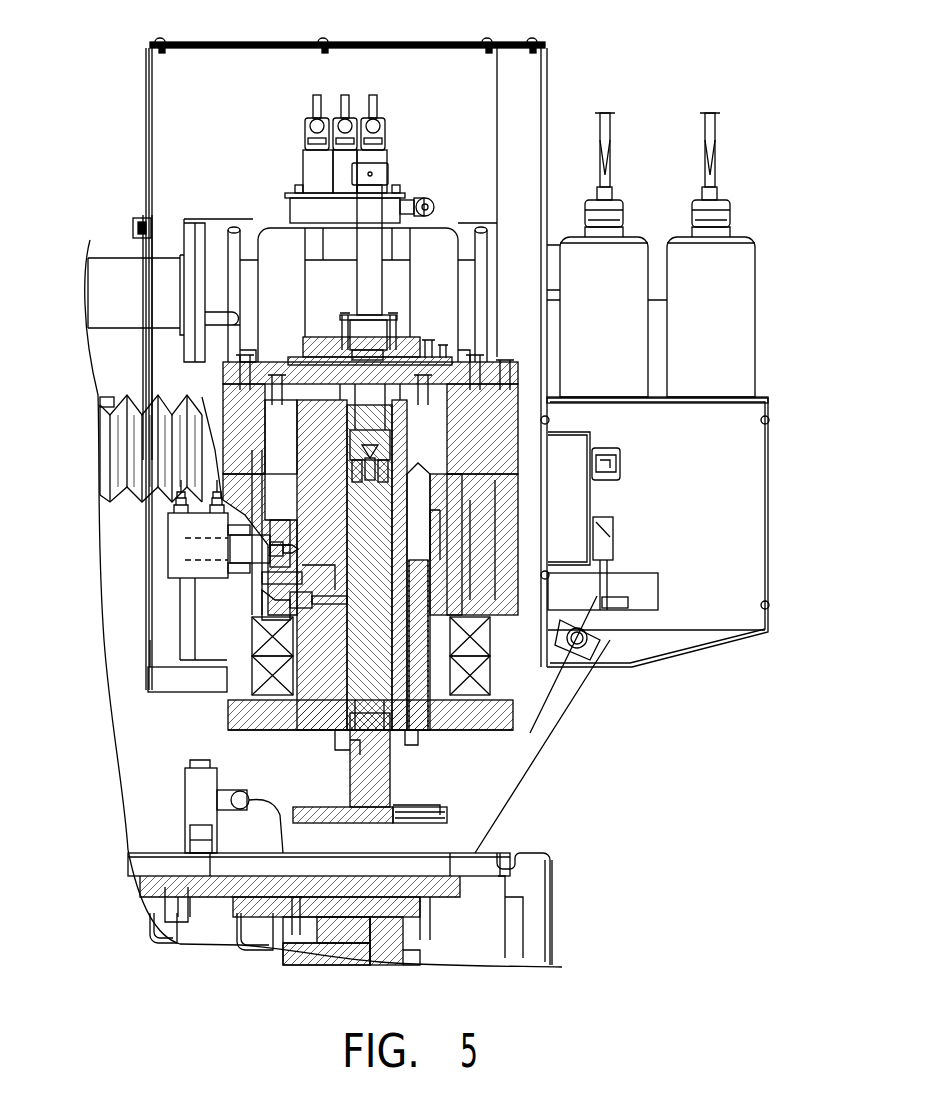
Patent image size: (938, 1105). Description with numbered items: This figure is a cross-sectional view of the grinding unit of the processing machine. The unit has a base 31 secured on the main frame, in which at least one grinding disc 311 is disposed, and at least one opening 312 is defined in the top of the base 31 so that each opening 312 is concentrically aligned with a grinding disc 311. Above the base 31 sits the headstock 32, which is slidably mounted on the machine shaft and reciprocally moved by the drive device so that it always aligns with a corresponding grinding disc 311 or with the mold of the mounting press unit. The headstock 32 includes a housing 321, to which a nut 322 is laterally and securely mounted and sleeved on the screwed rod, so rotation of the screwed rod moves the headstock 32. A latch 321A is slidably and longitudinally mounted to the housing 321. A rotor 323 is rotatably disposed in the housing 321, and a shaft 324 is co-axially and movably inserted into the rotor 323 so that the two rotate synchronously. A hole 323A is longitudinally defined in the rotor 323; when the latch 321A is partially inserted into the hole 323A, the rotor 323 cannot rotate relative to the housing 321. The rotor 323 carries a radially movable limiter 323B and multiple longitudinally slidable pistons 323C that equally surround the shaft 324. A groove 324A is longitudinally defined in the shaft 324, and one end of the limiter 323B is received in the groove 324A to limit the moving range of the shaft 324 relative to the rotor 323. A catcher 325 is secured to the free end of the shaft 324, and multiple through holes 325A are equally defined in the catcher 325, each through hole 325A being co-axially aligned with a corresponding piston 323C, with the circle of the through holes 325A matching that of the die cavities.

The base 31 is at (535, 880).
The grinding disc 311 is at (275, 880).
The opening 312 is at (455, 853).
The headstock 32 is at (588, 82).
The housing 321 is at (180, 121).
The latch 321A is at (265, 551).
The nut 322 is at (160, 655).
The rotor 323 is at (452, 548).
The hole 323A is at (285, 547).
The limiter 323B is at (337, 603).
The pistons 323C is at (420, 598).
The shaft 324 is at (380, 680).
The groove 324A is at (325, 573).
The catcher 325 is at (300, 812).
The through holes 325A is at (440, 800).